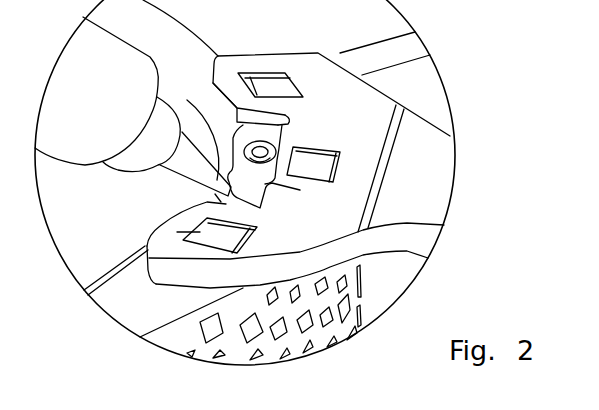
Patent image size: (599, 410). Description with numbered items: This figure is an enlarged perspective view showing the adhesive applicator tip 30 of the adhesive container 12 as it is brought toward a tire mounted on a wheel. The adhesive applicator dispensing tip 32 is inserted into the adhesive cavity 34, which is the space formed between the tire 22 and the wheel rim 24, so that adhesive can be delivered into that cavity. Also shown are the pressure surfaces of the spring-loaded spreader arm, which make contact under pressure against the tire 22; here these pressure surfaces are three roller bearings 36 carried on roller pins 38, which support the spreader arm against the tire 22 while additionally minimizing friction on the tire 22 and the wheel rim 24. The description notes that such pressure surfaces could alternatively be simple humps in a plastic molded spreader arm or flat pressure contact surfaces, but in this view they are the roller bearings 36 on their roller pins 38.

The adhesive container 12 is at (113, 115).
The tire 22 is at (220, 17).
The wheel rim 24 is at (170, 45).
The adhesive applicator tip 30 is at (189, 178).
The adhesive applicator dispensing tip 32 is at (198, 127).
The adhesive cavity 34 is at (279, 126).
The roller bearings 36 is at (272, 78).
The roller pins 38 is at (343, 162).